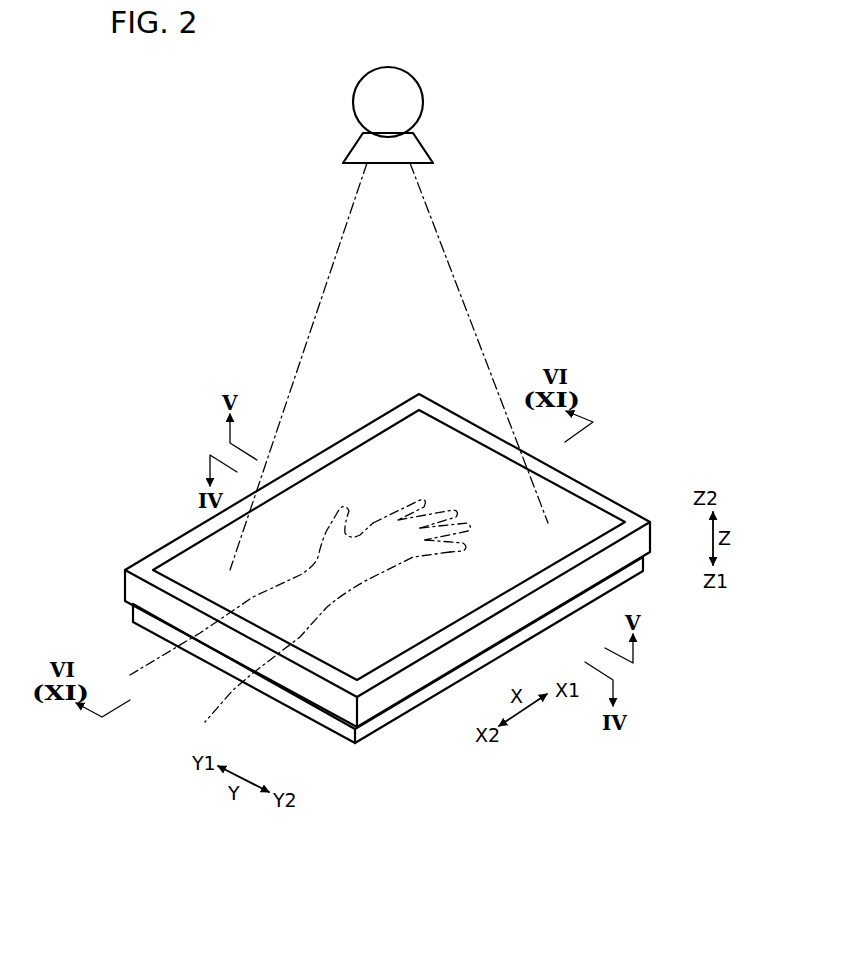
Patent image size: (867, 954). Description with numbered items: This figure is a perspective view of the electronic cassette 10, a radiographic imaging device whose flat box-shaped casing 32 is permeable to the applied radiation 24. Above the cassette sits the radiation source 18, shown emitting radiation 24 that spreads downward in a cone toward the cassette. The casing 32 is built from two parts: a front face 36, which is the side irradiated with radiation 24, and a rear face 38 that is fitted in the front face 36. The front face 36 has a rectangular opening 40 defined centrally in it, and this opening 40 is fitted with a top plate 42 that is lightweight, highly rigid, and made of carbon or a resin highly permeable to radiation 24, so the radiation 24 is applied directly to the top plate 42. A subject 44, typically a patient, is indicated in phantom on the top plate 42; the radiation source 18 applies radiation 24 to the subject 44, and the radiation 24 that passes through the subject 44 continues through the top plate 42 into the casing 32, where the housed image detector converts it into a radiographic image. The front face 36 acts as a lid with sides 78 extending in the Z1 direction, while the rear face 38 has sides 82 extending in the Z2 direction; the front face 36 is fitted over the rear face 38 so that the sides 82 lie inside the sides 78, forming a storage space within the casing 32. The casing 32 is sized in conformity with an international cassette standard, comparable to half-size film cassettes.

The electronic cassette 10 is at (145, 505).
The radiation source 18 is at (423, 100).
The radiation 24 is at (447, 243).
The casing 32 is at (594, 474).
The front face 36 is at (137, 562).
The rear face 38 is at (340, 723).
The rectangular opening 40 is at (320, 473).
The top plate 42 is at (383, 453).
The subject 44 is at (227, 702).
The sides of front face 78 is at (137, 589).
The sides of rear face 82 is at (637, 570).